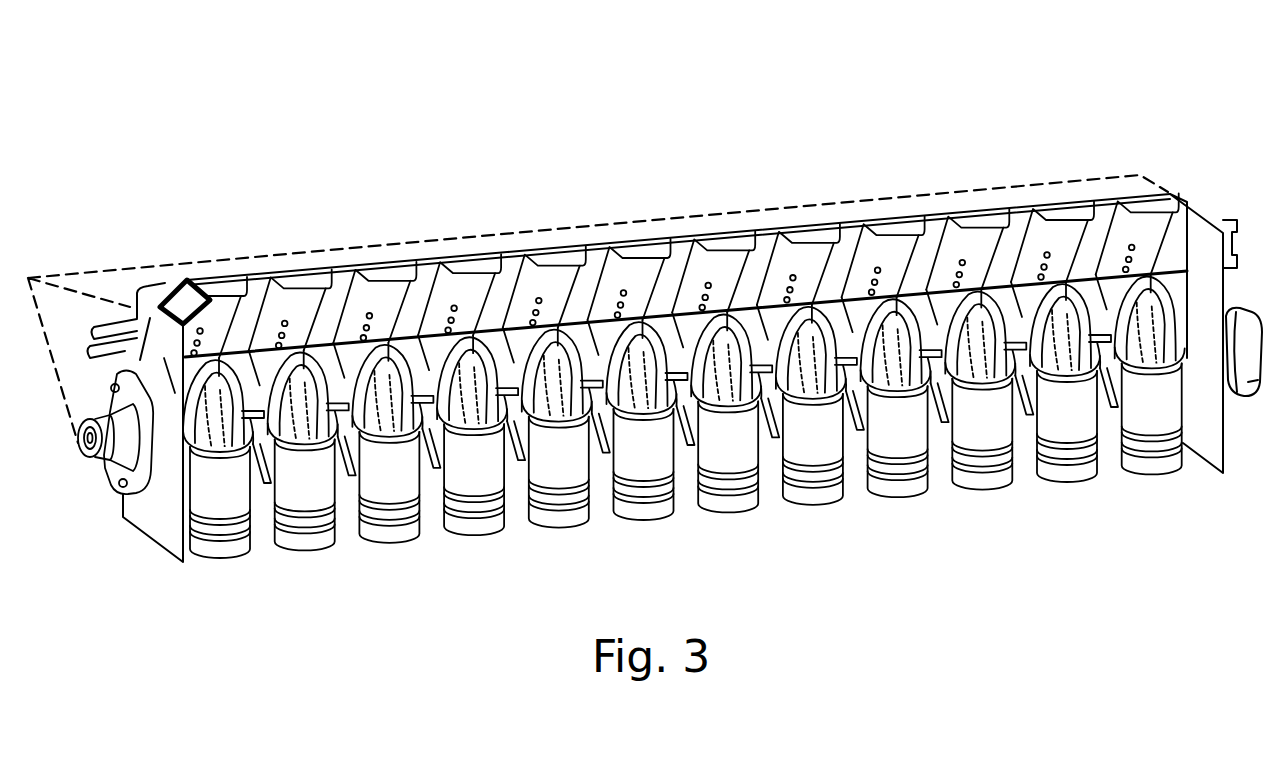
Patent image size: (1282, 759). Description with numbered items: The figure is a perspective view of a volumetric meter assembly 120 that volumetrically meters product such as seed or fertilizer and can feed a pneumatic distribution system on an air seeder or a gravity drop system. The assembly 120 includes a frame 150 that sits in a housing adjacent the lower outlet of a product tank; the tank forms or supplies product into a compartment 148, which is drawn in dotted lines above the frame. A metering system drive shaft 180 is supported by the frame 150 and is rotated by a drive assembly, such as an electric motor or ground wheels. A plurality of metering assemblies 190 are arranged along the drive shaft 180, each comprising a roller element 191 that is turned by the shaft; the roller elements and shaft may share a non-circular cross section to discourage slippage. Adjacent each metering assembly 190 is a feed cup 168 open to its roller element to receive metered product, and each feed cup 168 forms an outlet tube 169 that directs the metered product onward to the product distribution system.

The volumetric meter assembly 120 is at (650, 329).
The compartment 148 is at (118, 280).
The frame 150 is at (1188, 162).
The feed cup 168 is at (684, 496).
The outlet tube 169 is at (473, 550).
The metering system drive shaft 180 is at (267, 487).
The metering assembly 190 is at (405, 343).
The roller element 191 is at (737, 270).